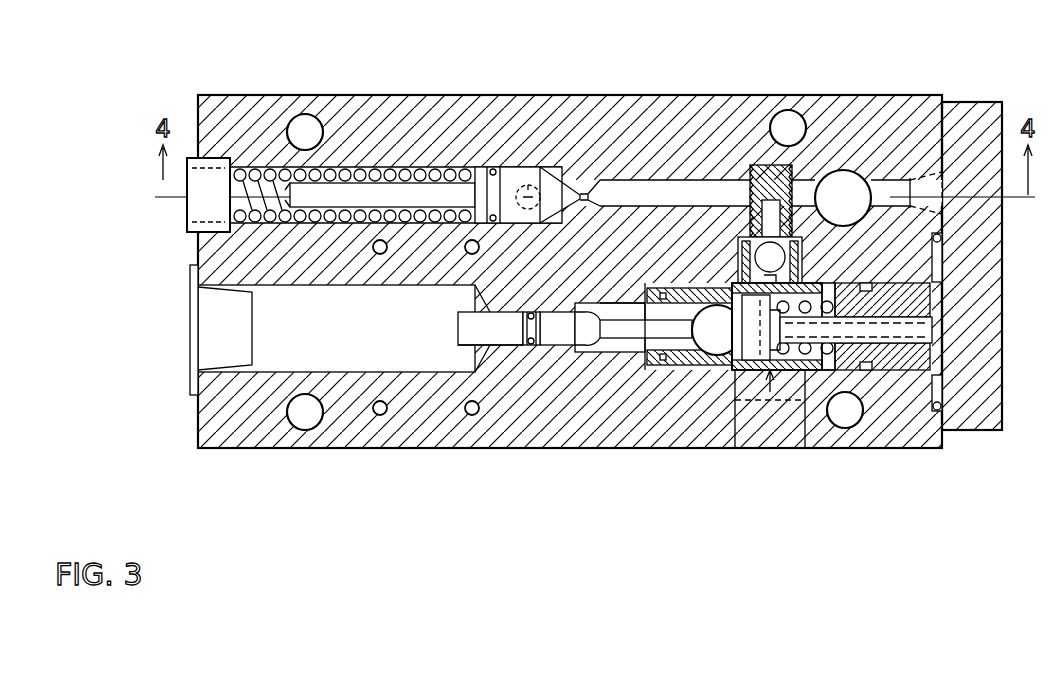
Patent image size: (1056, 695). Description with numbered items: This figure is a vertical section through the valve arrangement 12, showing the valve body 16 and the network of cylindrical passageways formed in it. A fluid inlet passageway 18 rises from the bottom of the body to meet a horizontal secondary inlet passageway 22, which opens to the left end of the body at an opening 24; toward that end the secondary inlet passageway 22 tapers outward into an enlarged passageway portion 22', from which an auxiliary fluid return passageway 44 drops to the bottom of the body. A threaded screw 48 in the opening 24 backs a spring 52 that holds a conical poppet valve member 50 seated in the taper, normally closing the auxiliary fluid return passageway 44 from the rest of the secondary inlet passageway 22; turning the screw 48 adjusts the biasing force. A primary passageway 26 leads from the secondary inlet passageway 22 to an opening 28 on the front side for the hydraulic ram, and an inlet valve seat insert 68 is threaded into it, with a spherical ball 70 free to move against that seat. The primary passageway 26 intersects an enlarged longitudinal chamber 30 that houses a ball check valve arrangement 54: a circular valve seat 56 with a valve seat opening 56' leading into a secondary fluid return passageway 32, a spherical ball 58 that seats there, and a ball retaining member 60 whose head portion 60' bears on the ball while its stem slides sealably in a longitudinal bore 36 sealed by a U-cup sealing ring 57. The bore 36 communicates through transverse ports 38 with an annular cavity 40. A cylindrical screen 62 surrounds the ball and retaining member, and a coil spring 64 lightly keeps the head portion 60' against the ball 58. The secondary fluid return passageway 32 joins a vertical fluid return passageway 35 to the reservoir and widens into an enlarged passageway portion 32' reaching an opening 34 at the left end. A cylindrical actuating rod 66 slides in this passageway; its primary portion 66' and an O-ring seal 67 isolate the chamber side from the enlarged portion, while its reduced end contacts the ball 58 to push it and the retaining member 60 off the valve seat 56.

The valve arrangement 12 is at (468, 448).
The valve body 16 is at (545, 448).
The fluid inlet passageway 18 is at (850, 175).
The secondary inlet passageway 22 is at (817, 114).
The enlarged passageway portion 22' is at (380, 117).
The opening 24 is at (194, 233).
The primary passageway 26 is at (733, 283).
The opening 28 is at (740, 370).
The longitudinal chamber 30 is at (680, 352).
The secondary fluid return passageway 32 is at (586, 418).
The enlarged passageway portion 32' is at (344, 400).
The opening 34 is at (218, 375).
The fluid return passageway 35 is at (597, 352).
The longitudinal bore 36 is at (940, 336).
The transverse ports 38 is at (940, 300).
The annular cavity 40 is at (940, 260).
The auxiliary fluid return passageway 44 is at (528, 185).
The screw 48 is at (188, 160).
The conical poppet valve member 50 is at (512, 167).
The spring 52 is at (358, 167).
The ball check valve arrangement 54 is at (735, 352).
The circular valve seat 56 is at (629, 418).
The valve seat opening 56' is at (650, 416).
The U-cup sealing ring 57 is at (860, 370).
The spherical ball 58 is at (705, 341).
The ball retaining member 60 is at (803, 298).
The head portion 60' is at (770, 409).
The cylindrical screen 62 is at (790, 370).
The coil spring 64 is at (785, 384).
The cylindrical actuating rod 66 is at (466, 320).
The primary portion 66' is at (464, 339).
The O-ring seal 67 is at (523, 345).
The inlet valve seat insert 68 is at (753, 165).
The spherical ball 70 is at (760, 267).